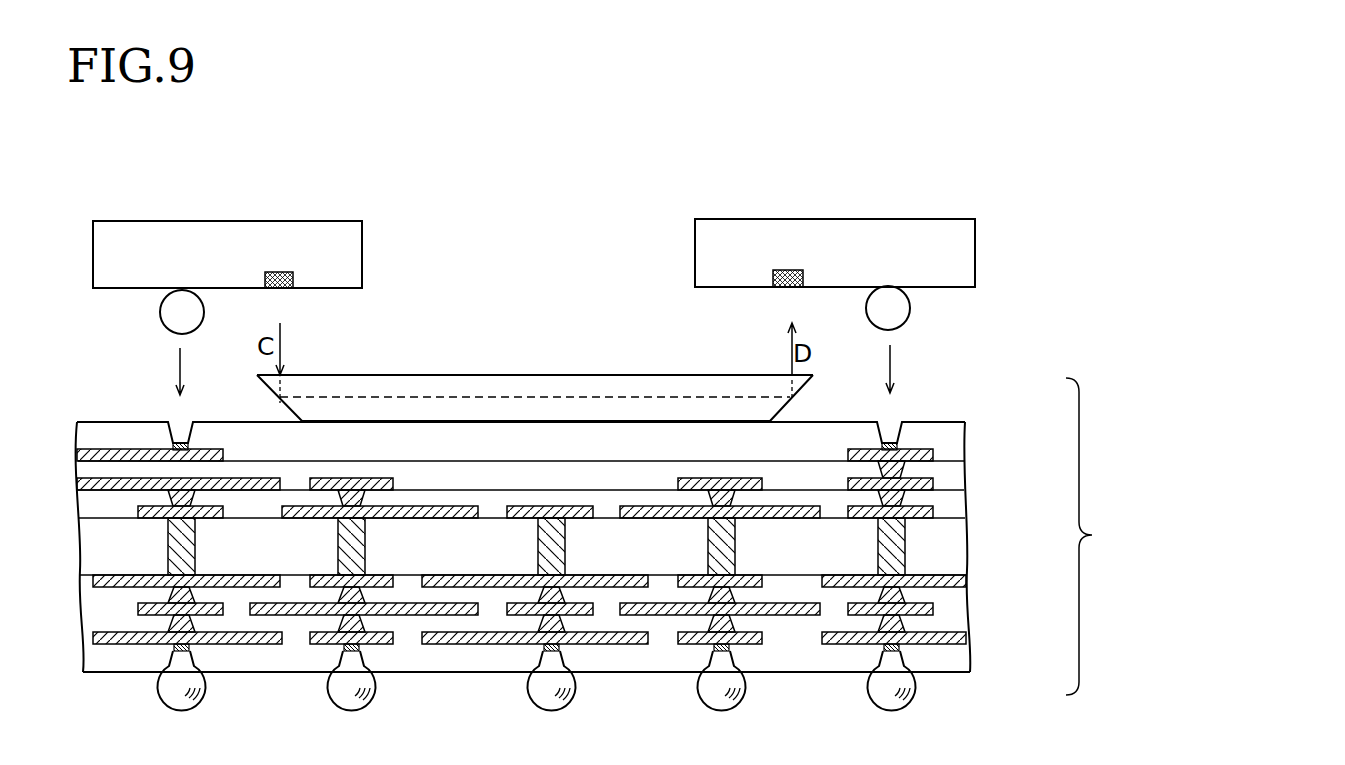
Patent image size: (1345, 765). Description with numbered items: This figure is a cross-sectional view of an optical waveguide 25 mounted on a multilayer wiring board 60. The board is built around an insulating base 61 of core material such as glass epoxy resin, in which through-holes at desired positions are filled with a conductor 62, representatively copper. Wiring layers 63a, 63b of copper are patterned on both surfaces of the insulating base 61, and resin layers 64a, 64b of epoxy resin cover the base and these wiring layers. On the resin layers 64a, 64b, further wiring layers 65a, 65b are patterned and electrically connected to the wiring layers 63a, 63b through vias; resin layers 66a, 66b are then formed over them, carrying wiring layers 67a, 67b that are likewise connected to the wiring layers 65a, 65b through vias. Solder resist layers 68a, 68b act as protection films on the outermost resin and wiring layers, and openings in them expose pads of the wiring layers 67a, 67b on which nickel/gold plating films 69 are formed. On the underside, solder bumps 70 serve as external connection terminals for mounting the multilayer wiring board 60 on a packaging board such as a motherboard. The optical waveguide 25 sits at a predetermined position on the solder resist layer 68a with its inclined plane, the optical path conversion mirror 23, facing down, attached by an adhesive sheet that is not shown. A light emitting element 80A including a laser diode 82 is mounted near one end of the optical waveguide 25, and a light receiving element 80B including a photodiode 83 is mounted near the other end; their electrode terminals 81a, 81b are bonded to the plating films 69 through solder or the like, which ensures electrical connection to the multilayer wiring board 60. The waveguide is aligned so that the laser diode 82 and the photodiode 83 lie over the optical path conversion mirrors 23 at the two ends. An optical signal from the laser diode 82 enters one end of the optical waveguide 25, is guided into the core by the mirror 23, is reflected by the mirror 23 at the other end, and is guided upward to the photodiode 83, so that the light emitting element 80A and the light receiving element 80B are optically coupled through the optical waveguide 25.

The light emitting element 80A is at (327, 232).
The light receiving element 80B is at (762, 230).
The electrode terminal 81a is at (171, 312).
The electrode terminal 81b is at (880, 310).
The laser diode 82 is at (287, 288).
The photodiode 83 is at (782, 287).
The optical waveguide 25 is at (375, 367).
The optical path conversion mirror 23 is at (283, 407).
The multilayer wiring board 60 is at (1188, 536).
The insulating base 61 is at (958, 553).
The conductor 62 is at (905, 533).
The wiring layer 63a is at (940, 510).
The wiring layer 63b is at (958, 580).
The resin layer 64a is at (958, 498).
The resin layer 64b is at (958, 594).
The wiring layer 65a is at (935, 485).
The wiring layer 65b is at (940, 612).
The resin layer 66a is at (955, 470).
The resin layer 66b is at (958, 625).
The wiring layer 67a is at (935, 452).
The wiring layer 67b is at (958, 640).
The solder resist layer 68a is at (948, 432).
The solder resist layer 68b is at (958, 670).
The nickel/gold plating film 69 is at (897, 440).
The solder bump 70 is at (870, 688).